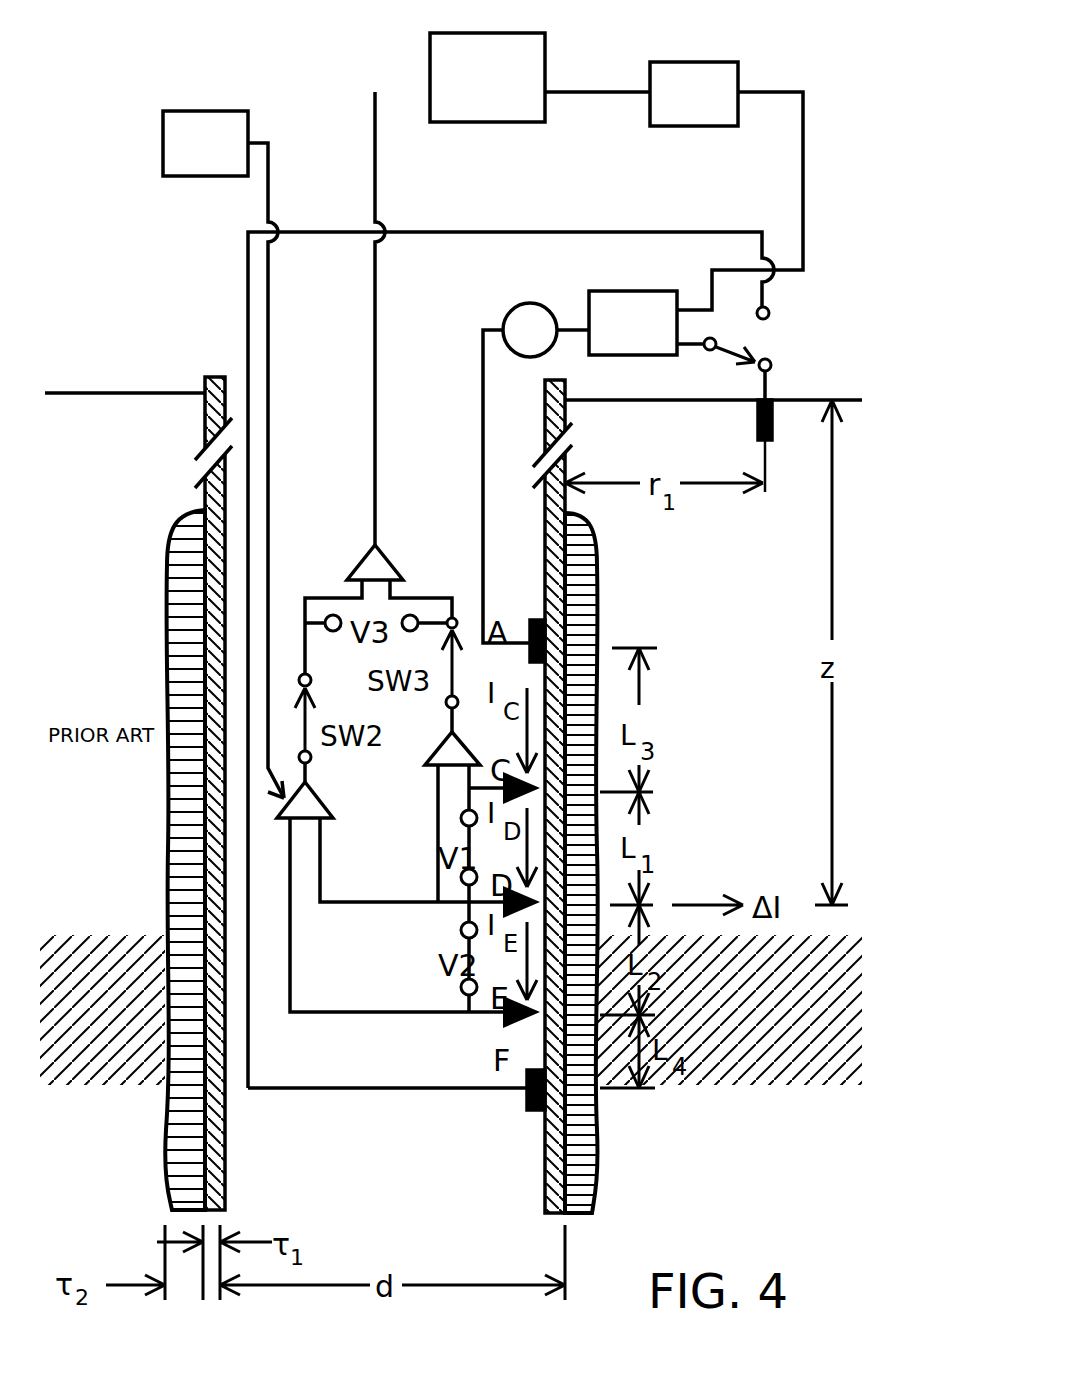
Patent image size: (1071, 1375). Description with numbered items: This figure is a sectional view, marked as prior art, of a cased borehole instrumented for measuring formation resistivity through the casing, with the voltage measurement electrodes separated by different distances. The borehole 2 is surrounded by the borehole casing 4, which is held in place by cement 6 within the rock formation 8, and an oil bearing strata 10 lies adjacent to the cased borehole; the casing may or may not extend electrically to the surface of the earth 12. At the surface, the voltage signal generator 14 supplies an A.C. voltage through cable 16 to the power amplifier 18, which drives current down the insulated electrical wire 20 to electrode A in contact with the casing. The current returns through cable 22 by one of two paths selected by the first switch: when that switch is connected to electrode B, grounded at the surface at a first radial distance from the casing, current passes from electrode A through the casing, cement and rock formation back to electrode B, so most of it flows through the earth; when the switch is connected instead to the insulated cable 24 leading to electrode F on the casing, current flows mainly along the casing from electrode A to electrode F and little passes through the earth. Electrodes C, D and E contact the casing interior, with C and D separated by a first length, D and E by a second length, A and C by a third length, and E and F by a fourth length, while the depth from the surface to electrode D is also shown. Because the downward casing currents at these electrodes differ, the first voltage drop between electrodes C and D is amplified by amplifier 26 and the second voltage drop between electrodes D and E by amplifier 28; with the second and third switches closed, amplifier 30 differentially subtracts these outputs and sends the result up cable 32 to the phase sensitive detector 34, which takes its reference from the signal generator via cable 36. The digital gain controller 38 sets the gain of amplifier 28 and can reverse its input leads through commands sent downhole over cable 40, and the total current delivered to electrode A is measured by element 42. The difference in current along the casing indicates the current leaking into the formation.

The borehole 2 is at (365, 1128).
The borehole casing 4 is at (548, 1128).
The cement 6 is at (583, 1120).
The rock formation 8 is at (735, 1097).
The oil bearing strata 10 is at (815, 1035).
The surface of the earth 12 is at (597, 402).
The voltage signal generator 14 is at (715, 62).
The cable 16 is at (803, 212).
The power amplifier 18 is at (588, 318).
The insulated electrical wire 20 is at (483, 360).
The cable 22 is at (700, 352).
The insulated cable 24 is at (505, 232).
The amplifier 26 is at (425, 745).
The amplifier 28 is at (330, 800).
The amplifier 30 is at (393, 570).
The cable 32 is at (375, 425).
The phase sensitive detector 34 is at (430, 60).
The cable 36 is at (570, 92).
The digital gain controller 38 is at (248, 128).
The cable 40 is at (268, 318).
The current measuring element 42 is at (505, 318).